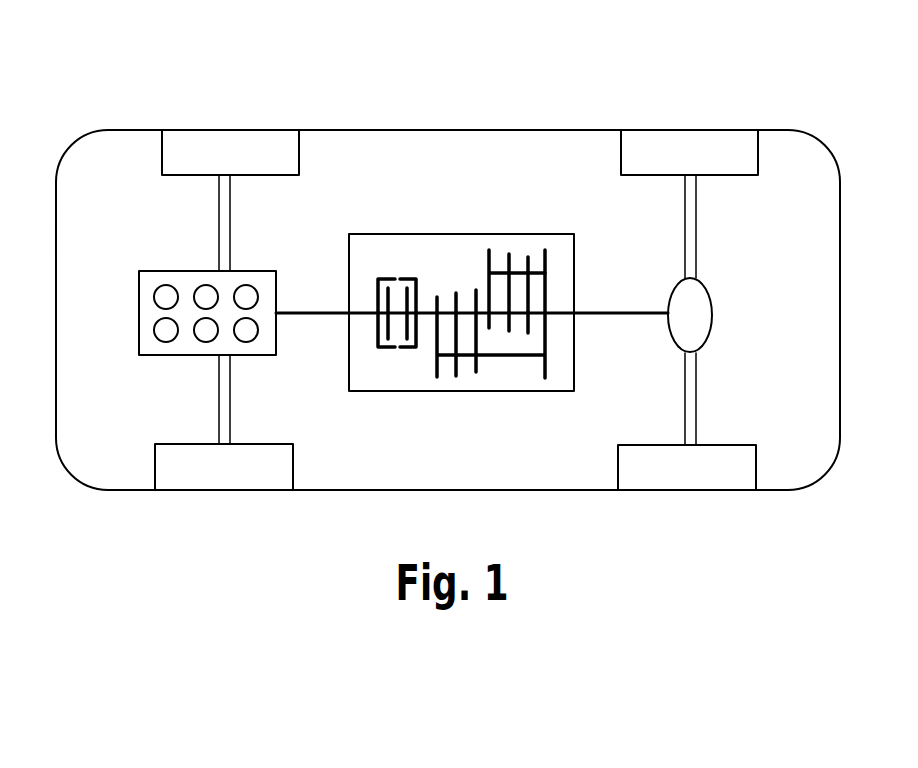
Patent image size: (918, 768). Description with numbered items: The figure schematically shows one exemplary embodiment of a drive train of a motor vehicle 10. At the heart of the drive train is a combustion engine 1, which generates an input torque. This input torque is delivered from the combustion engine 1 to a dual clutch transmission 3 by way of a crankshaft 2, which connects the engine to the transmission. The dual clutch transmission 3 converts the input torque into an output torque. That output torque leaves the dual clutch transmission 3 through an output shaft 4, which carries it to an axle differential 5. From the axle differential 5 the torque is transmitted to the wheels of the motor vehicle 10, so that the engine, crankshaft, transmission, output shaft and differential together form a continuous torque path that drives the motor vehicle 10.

The motor vehicle 10 is at (416, 61).
The combustion engine 1 is at (151, 271).
The crankshaft 2 is at (319, 312).
The dual clutch transmission 3 is at (387, 391).
The output shaft 4 is at (624, 312).
The axle differential 5 is at (712, 305).